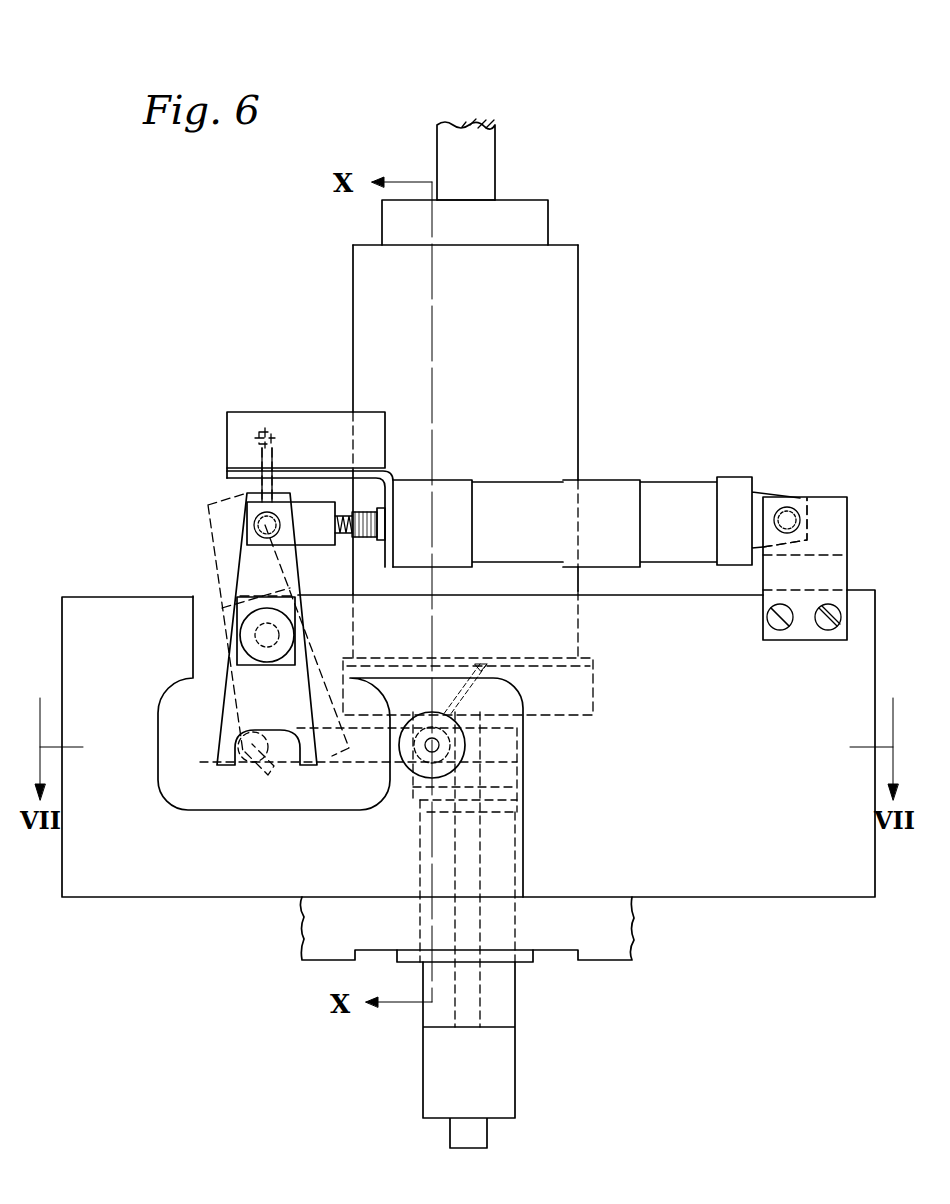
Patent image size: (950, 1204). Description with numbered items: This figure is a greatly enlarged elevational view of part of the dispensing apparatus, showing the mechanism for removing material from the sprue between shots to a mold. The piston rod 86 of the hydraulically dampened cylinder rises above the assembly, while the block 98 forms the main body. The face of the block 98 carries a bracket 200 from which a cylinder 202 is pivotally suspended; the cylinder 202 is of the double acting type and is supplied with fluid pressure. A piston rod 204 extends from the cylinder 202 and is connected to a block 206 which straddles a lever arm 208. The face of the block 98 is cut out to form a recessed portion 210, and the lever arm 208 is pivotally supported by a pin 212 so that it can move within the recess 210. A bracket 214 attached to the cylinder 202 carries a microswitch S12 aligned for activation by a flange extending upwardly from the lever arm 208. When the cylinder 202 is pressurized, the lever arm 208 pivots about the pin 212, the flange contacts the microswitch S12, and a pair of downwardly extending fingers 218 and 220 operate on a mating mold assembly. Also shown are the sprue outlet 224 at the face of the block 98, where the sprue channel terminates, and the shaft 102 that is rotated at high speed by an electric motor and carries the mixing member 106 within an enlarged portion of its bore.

The piston rod 86 is at (495, 155).
The microswitch S12 is at (310, 412).
The bracket 214 is at (393, 472).
The cylinder 202 is at (665, 483).
The bracket 200 is at (840, 497).
The block 98 is at (790, 899).
The recessed portion 210 is at (156, 712).
The lever arm 208 is at (240, 568).
The block 206 is at (310, 502).
The piston rod 204 is at (363, 540).
The pin 212 is at (260, 643).
The mixing member 106 is at (597, 658).
The sprue outlet 224 is at (434, 739).
The finger 218 is at (220, 767).
The finger 220 is at (310, 766).
The shaft 102 is at (516, 1013).